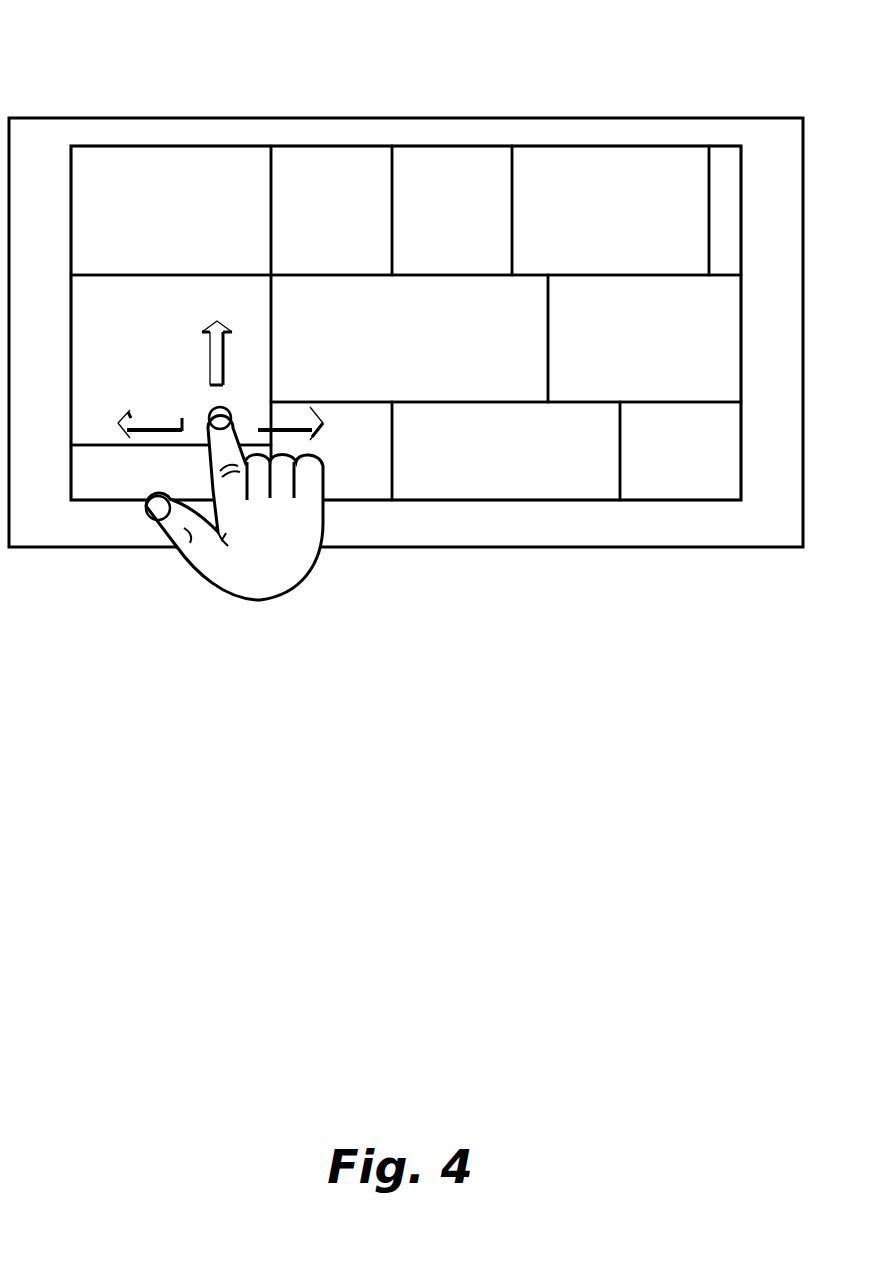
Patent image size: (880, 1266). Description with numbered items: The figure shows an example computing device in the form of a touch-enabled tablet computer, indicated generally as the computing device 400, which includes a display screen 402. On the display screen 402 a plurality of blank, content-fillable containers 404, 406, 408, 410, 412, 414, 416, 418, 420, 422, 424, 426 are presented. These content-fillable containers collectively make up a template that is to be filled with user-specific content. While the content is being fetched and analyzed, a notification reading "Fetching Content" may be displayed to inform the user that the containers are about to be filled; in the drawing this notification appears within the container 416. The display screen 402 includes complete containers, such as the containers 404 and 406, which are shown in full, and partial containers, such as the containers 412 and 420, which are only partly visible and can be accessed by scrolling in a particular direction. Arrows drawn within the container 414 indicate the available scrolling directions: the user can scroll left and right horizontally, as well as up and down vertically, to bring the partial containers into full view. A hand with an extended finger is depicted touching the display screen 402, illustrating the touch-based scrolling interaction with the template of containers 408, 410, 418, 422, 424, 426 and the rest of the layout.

The computing device 400 is at (144, 54).
The display screen 402 is at (170, 146).
The content-fillable container 404 is at (171, 210).
The content-fillable container 406 is at (331, 210).
The content-fillable container 408 is at (452, 210).
The content-fillable container 410 is at (610, 210).
The content-fillable container 412 is at (725, 167).
The content-fillable container 414 is at (197, 360).
The content-fillable container 416 is at (409, 338).
The content-fillable container 418 is at (644, 338).
The content-fillable container 420 is at (171, 472).
The content-fillable container 422 is at (331, 451).
The content-fillable container 424 is at (506, 451).
The content-fillable container 426 is at (680, 451).